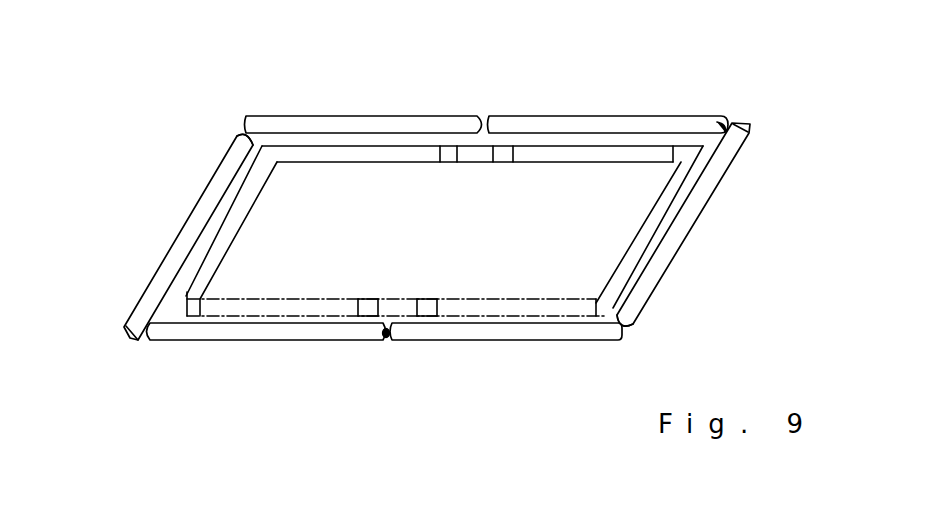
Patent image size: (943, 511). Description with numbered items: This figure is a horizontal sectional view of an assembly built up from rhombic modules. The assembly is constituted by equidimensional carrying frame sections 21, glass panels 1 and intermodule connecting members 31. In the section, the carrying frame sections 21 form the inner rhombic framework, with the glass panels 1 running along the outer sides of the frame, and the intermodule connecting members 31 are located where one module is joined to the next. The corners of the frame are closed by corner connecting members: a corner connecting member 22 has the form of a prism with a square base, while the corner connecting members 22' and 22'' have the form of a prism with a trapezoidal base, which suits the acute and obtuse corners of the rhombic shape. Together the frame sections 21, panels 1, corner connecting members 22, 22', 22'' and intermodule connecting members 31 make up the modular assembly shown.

The glass panel 1 is at (383, 122).
The carrying frame section 21 is at (655, 214).
The corner connecting member 22 is at (316, 369).
The corner connecting member 22' is at (444, 230).
The corner connecting member 22'' is at (505, 184).
The intermodule connecting member 31 is at (388, 313).